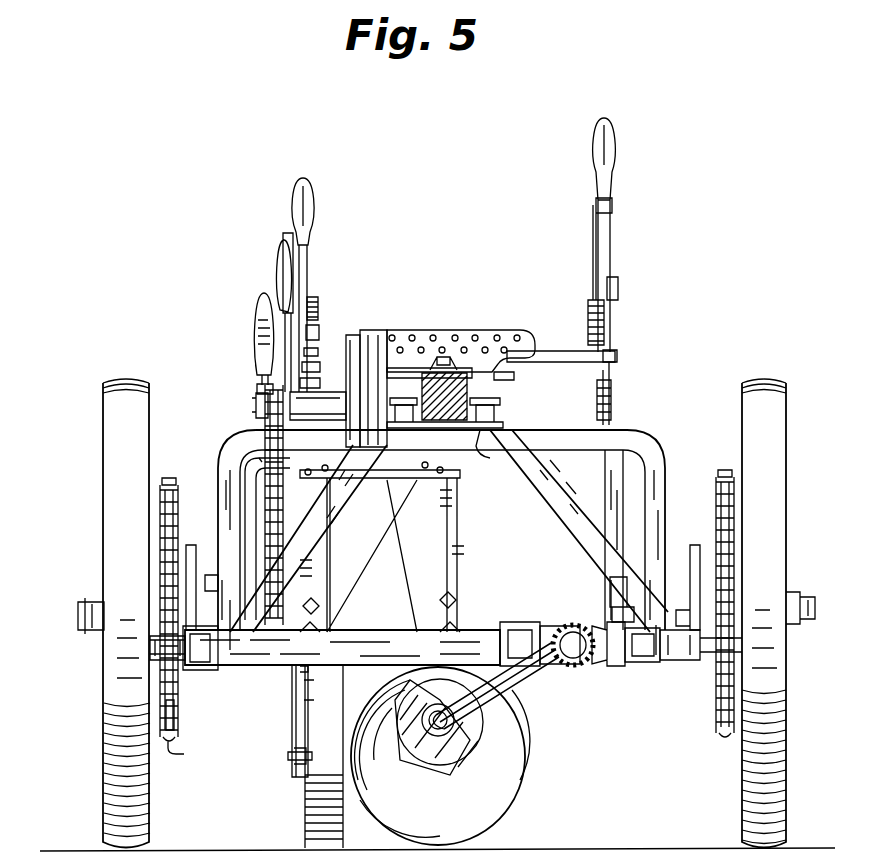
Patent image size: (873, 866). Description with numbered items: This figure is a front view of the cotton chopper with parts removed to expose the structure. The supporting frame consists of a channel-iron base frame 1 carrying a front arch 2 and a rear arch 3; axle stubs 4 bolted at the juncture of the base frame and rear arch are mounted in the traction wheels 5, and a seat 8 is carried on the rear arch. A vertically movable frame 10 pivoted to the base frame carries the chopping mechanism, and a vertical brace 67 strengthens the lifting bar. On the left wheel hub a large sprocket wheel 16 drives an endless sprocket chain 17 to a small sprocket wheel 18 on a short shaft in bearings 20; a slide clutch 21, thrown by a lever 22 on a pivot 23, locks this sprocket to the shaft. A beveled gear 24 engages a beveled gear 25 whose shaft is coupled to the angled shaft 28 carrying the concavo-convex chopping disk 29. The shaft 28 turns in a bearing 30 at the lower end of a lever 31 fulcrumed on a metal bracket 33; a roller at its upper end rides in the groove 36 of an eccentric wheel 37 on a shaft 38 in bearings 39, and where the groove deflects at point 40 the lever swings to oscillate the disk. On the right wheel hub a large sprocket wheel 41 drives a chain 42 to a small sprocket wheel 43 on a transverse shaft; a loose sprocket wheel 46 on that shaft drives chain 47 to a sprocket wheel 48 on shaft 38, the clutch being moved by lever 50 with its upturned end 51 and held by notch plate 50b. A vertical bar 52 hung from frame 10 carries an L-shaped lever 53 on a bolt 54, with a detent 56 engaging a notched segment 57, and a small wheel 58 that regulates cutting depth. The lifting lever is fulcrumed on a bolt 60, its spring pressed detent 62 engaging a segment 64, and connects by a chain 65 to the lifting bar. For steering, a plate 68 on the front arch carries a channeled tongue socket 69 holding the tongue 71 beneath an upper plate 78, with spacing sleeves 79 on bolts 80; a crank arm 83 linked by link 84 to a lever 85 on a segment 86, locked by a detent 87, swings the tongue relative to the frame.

The base frame 1 is at (342, 647).
The front arch 2 is at (560, 502).
The rear arch 3 is at (658, 470).
The axle stubs 4 is at (190, 600).
The traction wheels 5 is at (126, 392).
The seat 8 is at (420, 330).
The vertically movable frame 10 is at (440, 575).
The large sprocket wheel 16 is at (722, 740).
The endless sprocket chain 17 is at (716, 700).
The small sprocket wheel 18 is at (708, 662).
The bearings 20 is at (518, 628).
The slide clutch 21 is at (650, 664).
The lever 22 is at (605, 490).
The pivot 23 is at (616, 600).
The beveled gear 24 is at (600, 626).
The beveled gear 25 is at (566, 624).
The shaft 28 is at (520, 685).
The concavo-convex chopping disk 29 is at (500, 808).
The bearing 30 is at (452, 740).
The lever 31 is at (400, 604).
The metal bracket 33 is at (514, 378).
The groove 36 is at (366, 330).
The eccentric wheel 37 is at (325, 337).
The shaft 38 is at (256, 404).
The bearings 39 is at (318, 406).
The groove deflection 40 is at (318, 304).
The large sprocket wheel 41 is at (181, 660).
The endless sprocket chain 42 is at (176, 722).
The small sprocket wheel 43 is at (157, 648).
The sprocket wheel 46 is at (255, 670).
The sprocket chain 47 is at (262, 515).
The sprocket wheel 48 is at (257, 386).
The lever 50 is at (252, 498).
The notch plate 50b is at (256, 468).
The upwardly projecting end 51 is at (255, 325).
The vertical bar 52 is at (308, 697).
The L-shaped lever 53 is at (300, 704).
The bolt 54 is at (288, 755).
The detent 56 is at (283, 345).
The notched segment 57 is at (268, 380).
The small wheel 58 is at (305, 808).
The bolt 60 is at (321, 371).
The spring pressed detent 62 is at (312, 292).
The segment 64 is at (320, 356).
The chain 65 is at (318, 385).
The vertical brace 67 is at (352, 570).
The plate 68 is at (488, 458).
The channeled tongue socket 69 is at (444, 357).
The tongue 71 is at (395, 350).
The upper plate 78 is at (470, 373).
The spacing sleeves 79 is at (500, 415).
The bolts 80 is at (500, 400).
The crank arm 83 is at (560, 355).
The link 84 is at (620, 300).
The lever 85 is at (618, 135).
The segment 86 is at (597, 385).
The detent 87 is at (590, 318).